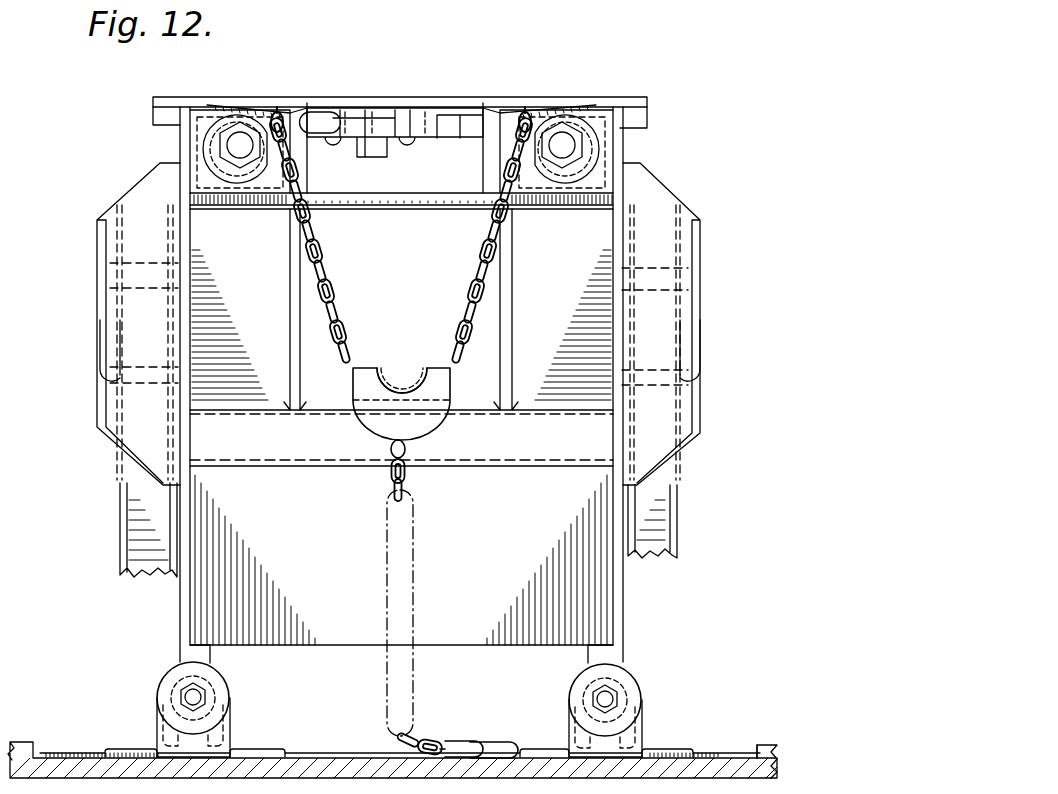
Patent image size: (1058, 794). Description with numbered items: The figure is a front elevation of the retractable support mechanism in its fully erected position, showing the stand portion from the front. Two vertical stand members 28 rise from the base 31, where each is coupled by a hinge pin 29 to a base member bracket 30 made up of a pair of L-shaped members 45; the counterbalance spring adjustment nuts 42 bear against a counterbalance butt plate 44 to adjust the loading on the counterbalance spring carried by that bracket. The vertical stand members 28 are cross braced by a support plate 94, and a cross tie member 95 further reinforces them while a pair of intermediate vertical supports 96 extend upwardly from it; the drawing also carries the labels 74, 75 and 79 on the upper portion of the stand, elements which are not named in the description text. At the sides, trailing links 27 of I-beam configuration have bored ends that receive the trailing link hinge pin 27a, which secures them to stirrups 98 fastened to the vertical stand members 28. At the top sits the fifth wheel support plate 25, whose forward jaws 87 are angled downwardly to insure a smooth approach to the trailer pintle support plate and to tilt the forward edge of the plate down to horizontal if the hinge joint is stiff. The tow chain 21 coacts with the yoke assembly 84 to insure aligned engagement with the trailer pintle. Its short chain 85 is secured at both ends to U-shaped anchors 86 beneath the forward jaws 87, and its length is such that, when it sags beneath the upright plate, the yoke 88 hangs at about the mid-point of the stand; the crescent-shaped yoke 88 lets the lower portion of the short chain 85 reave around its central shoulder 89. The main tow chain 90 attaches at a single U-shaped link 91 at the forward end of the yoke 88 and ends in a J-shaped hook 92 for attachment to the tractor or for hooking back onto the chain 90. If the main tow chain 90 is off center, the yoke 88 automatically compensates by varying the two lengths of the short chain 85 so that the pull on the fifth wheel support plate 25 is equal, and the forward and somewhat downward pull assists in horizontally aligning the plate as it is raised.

The tow chain 21 is at (418, 504).
The fifth wheel support plate 25 is at (497, 97).
The trailing link 27 is at (120, 468).
The trailing link hinge pin 27a is at (117, 275).
The vertical stand member 28 is at (180, 598).
The hinge pin 29 is at (183, 722).
The base member bracket 30 is at (655, 722).
The base 31 is at (315, 758).
The counterbalance spring adjustment nut 42 is at (197, 703).
The counterbalance butt plate 44 is at (222, 696).
The L-shaped member 45 is at (115, 752).
The cross member 74 is at (238, 155).
The nut 75 is at (240, 108).
The pivot bracket 79 is at (223, 175).
The yoke assembly 84 is at (380, 355).
The short chain 85 is at (340, 285).
The U-shaped anchor 86 is at (283, 110).
The forward jaw 87 is at (268, 102).
The yoke 88 is at (440, 392).
The central shoulder 89 is at (397, 393).
The main tow chain 90 is at (410, 527).
The U-shaped link 91 is at (417, 440).
The J-shaped hook 92 is at (480, 740).
The support plate 94 is at (580, 597).
The cross tie member 95 is at (592, 452).
The intermediate vertical support 96 is at (292, 300).
The stirrup 98 is at (100, 327).